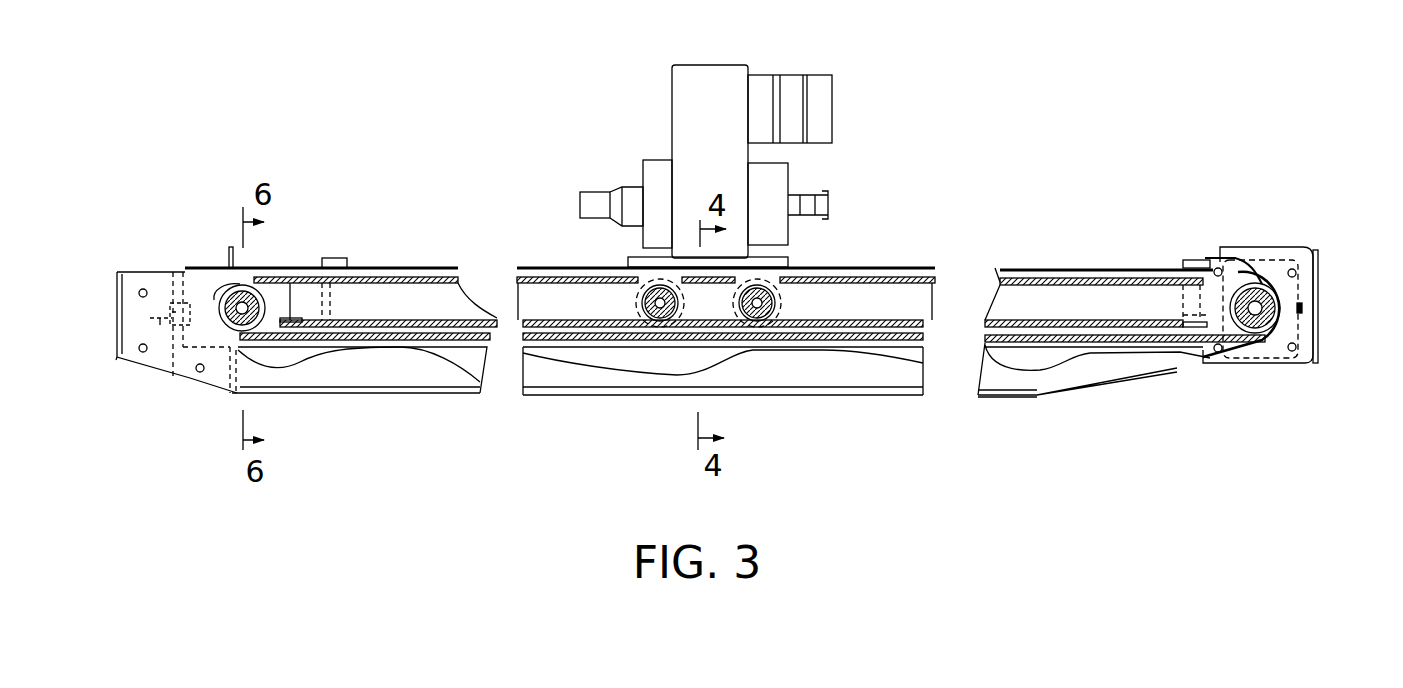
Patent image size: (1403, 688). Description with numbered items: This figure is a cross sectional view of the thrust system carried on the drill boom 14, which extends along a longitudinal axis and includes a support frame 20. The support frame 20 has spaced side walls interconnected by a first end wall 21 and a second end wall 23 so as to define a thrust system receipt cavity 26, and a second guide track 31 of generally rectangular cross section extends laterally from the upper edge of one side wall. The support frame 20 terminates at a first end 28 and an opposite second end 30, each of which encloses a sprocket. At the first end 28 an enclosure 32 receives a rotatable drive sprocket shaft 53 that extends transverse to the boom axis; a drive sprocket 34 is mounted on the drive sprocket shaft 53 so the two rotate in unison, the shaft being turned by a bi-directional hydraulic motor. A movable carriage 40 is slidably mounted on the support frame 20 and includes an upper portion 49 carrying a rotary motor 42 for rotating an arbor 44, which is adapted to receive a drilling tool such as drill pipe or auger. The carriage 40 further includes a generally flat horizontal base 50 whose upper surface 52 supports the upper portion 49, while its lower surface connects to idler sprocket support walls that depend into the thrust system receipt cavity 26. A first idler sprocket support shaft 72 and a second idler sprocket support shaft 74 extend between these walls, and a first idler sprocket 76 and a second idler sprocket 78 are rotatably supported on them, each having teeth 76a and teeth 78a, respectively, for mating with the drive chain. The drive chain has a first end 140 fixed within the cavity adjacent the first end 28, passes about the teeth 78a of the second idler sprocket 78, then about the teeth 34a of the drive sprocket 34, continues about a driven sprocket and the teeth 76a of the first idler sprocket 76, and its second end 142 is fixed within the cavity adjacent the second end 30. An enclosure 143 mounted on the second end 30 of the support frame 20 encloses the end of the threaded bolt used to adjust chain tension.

The drill boom 14 is at (1003, 412).
The support frame 20 is at (328, 397).
The first end wall 21 is at (1294, 300).
The second end wall 23 is at (183, 312).
The thrust system receipt cavity 26 is at (573, 292).
The first end of support frame 28 is at (1247, 247).
The second end of support frame 30 is at (185, 386).
The second guide track 31 is at (1005, 268).
The enclosure 32 is at (1319, 333).
The drive sprocket 34 is at (1240, 322).
The teeth of drive sprocket 34a is at (1230, 297).
The movable carriage 40 is at (703, 60).
The rotary motor 42 is at (815, 80).
The arbor 44 is at (585, 200).
The upper portion of carriage 49 is at (668, 106).
The horizontal base 50 is at (790, 261).
The upper surface of horizontal base 52 is at (683, 255).
The drive sprocket shaft 53 is at (1255, 314).
The first idler sprocket support shaft 72 is at (663, 312).
The second idler sprocket support shaft 74 is at (757, 308).
The first idler sprocket 76 is at (657, 308).
The teeth of first idler sprocket 76a is at (640, 302).
The second idler sprocket 78 is at (767, 313).
The teeth of second idler sprocket 78a is at (778, 293).
The first end of drive chain 140 is at (1185, 344).
The second end of drive chain 142 is at (301, 312).
The enclosure on second end 143 is at (116, 360).